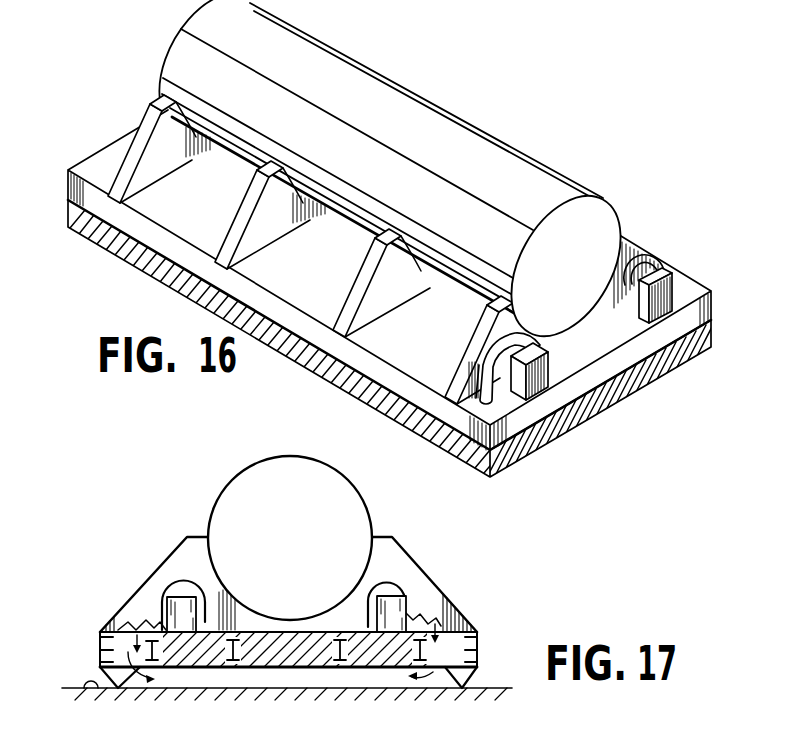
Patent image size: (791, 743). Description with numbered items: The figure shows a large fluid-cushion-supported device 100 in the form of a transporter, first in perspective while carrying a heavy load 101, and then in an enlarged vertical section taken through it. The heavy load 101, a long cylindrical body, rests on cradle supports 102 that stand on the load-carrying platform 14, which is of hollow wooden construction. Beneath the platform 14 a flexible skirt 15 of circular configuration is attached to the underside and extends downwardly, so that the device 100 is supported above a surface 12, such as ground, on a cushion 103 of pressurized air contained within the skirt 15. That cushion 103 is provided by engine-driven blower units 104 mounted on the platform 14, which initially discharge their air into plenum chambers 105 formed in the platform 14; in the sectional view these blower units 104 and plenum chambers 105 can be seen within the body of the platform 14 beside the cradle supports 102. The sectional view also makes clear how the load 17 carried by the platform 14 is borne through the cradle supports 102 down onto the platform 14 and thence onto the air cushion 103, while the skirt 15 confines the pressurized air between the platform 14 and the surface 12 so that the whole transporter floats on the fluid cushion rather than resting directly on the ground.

In FIG. 16, the large device 100 is at (520, 92).
In FIG. 17, the large device 100 is at (94, 618).
In FIG. 16, the heavy load 101 is at (356, 88).
In FIG. 17, the heavy load 101 is at (300, 544).
In FIG. 16, the cradle supports 102 is at (258, 212).
In FIG. 17, the cradle supports 102 is at (173, 552).
In FIG. 17, the cushion of pressurized air 103 is at (279, 680).
In FIG. 16, the engine-driven blower units 104 is at (482, 360).
In FIG. 17, the engine-driven blower units 104 is at (408, 606).
In FIG. 17, the plenum chambers 105 is at (98, 648).
In FIG. 17, the surface 12 is at (89, 691).
In FIG. 17, the load-carrying platform 14 is at (279, 626).
In FIG. 16, the flexible skirt 15 is at (596, 423).
In FIG. 17, the flexible skirt 15 is at (484, 675).
In FIG. 16, the load 17 is at (445, 289).